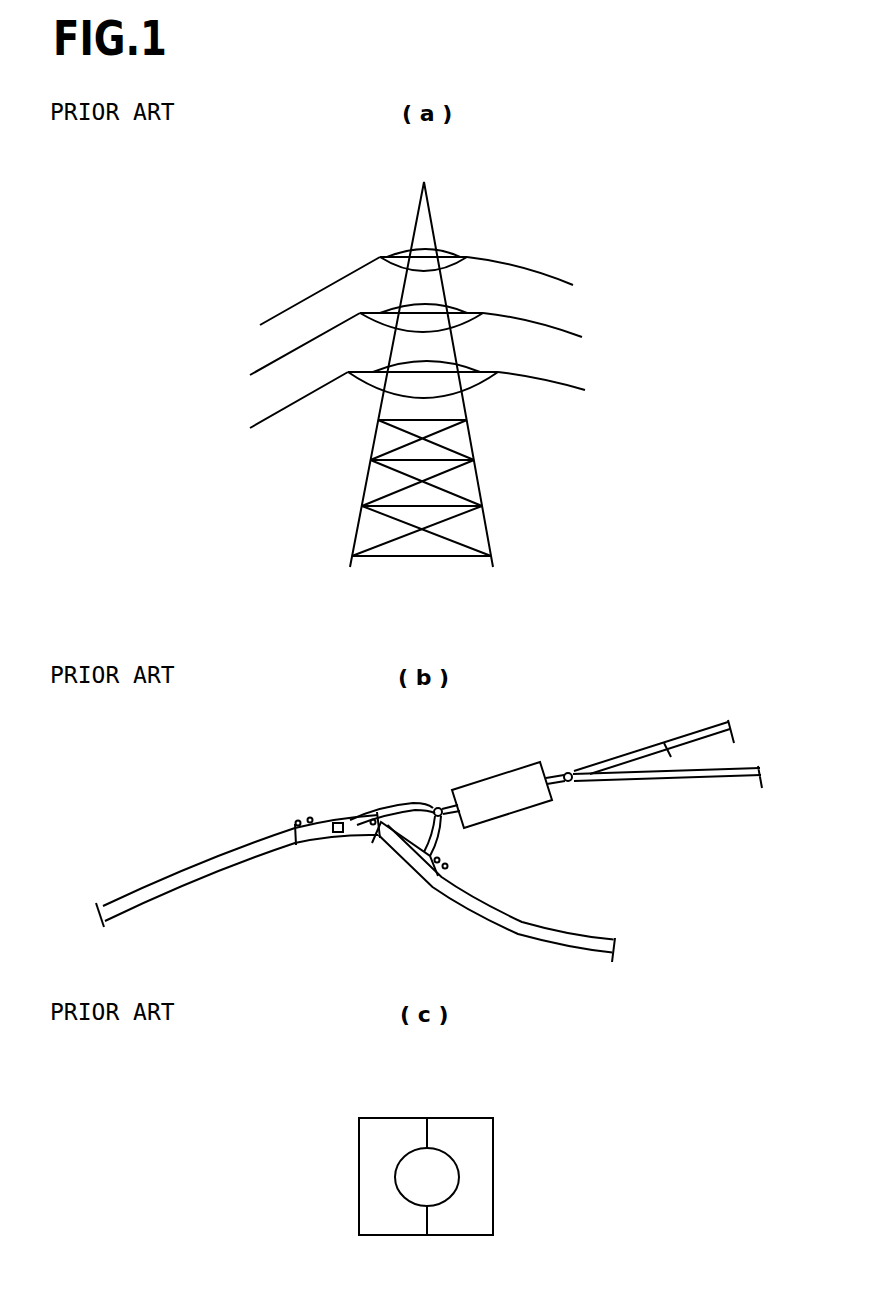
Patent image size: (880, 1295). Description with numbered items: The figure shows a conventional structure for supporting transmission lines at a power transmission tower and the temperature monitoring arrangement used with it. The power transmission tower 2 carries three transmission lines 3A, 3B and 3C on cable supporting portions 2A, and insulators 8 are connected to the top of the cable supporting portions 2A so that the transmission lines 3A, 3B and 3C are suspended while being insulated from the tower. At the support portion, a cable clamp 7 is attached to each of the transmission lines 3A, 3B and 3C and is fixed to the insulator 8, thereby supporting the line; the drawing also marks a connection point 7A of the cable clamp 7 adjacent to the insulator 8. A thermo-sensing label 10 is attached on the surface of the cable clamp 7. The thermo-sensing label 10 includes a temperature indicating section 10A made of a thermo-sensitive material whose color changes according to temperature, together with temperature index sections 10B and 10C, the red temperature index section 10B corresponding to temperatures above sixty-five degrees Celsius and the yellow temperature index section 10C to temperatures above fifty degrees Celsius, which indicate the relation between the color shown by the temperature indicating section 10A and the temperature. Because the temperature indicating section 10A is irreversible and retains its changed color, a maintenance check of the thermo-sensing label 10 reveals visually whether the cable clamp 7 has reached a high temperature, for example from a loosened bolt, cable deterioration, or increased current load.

The power transmission tower 2 is at (365, 480).
The cable supporting portion 2A is at (569, 772).
The transmission line 3A is at (266, 320).
The transmission line 3B is at (262, 372).
The transmission line 3C is at (262, 426).
The cable clamp 7 is at (383, 806).
The jumper connection point 7A is at (438, 807).
The insulator 8 is at (380, 257).
The thermo-sensing label 10 is at (337, 822).
The temperature indicating section 10A is at (417, 1173).
The temperature index section 10B is at (365, 1185).
The temperature index section 10C is at (483, 1185).